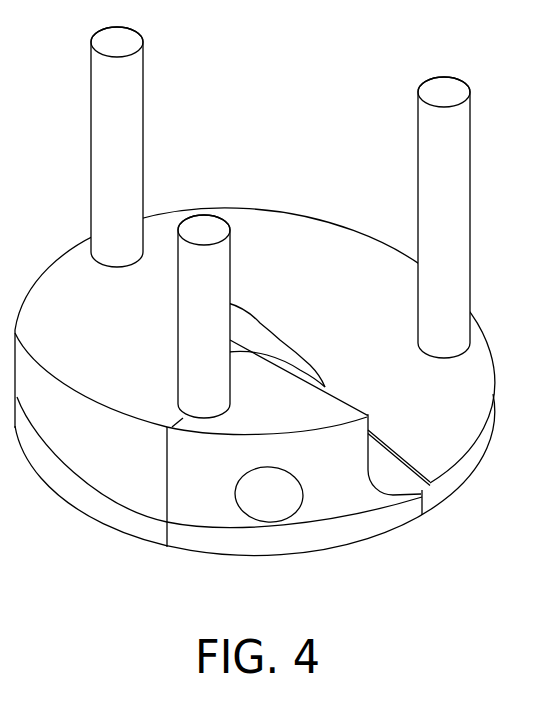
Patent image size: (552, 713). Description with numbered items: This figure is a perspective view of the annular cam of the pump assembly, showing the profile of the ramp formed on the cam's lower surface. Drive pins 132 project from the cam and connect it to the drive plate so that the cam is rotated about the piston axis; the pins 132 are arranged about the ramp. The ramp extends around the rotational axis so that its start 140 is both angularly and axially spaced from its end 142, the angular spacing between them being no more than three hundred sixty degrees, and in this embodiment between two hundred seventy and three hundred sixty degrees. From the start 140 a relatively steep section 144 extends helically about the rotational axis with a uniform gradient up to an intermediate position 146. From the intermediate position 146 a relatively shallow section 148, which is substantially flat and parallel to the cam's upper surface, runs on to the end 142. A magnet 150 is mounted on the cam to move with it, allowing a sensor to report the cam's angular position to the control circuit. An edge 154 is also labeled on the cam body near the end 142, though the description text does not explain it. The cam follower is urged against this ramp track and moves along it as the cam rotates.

The drive pins 132 is at (100, 88).
The start of the ramp 140 is at (383, 450).
The end of the ramp 142 is at (338, 396).
The relatively steep section 144 is at (304, 279).
The intermediate position 146 is at (230, 348).
The relatively shallow section 148 is at (267, 417).
The magnet 150 is at (273, 503).
The edge 154 is at (405, 487).